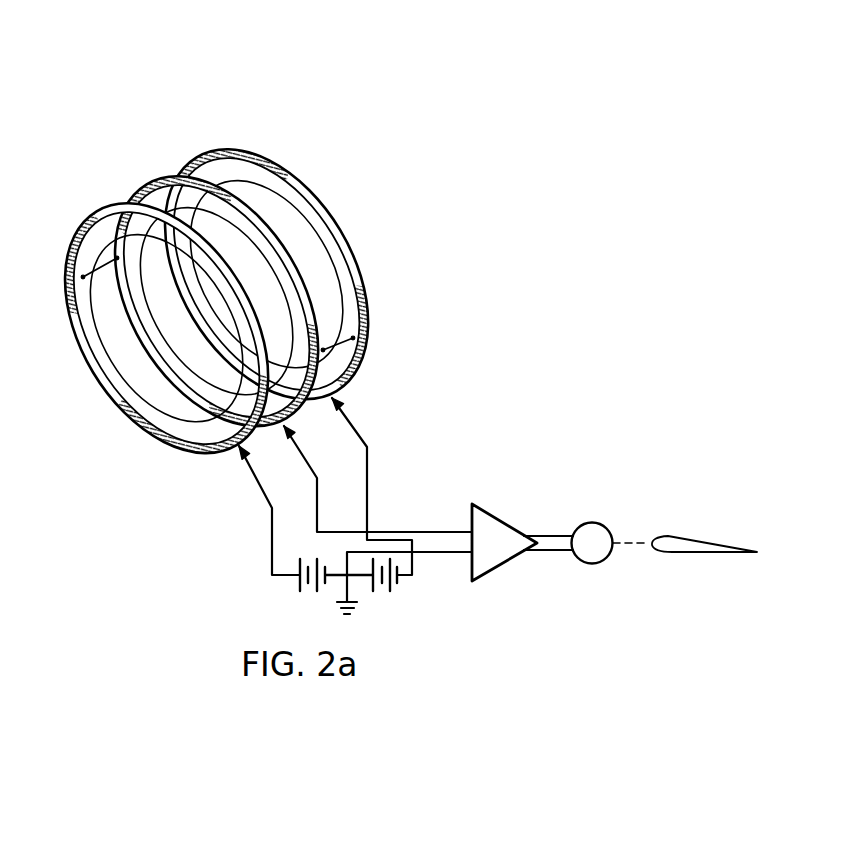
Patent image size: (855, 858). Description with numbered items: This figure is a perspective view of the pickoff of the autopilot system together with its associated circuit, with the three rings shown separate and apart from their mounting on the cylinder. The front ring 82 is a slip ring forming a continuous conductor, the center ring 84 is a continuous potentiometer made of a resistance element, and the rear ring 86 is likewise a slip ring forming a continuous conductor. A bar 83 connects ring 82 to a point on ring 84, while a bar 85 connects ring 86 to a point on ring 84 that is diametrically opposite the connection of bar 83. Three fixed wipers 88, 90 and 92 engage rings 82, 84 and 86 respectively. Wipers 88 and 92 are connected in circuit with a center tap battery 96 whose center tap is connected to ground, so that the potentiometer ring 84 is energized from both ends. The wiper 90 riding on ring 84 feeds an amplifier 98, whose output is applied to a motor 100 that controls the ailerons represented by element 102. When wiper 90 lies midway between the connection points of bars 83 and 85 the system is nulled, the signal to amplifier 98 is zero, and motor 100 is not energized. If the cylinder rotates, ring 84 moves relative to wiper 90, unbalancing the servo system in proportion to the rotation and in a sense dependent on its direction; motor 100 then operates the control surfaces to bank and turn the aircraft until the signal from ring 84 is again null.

The front ring 82 is at (92, 368).
The bar 83 is at (100, 275).
The center ring 84 is at (162, 378).
The bar 85 is at (337, 325).
The rear ring 86 is at (350, 255).
The wiper 88 is at (264, 503).
The wiper 90 is at (318, 477).
The wiper 92 is at (357, 427).
The center tap battery 96 is at (310, 590).
The amplifier 98 is at (507, 551).
The motor 100 is at (597, 523).
The ailerons 102 is at (690, 533).